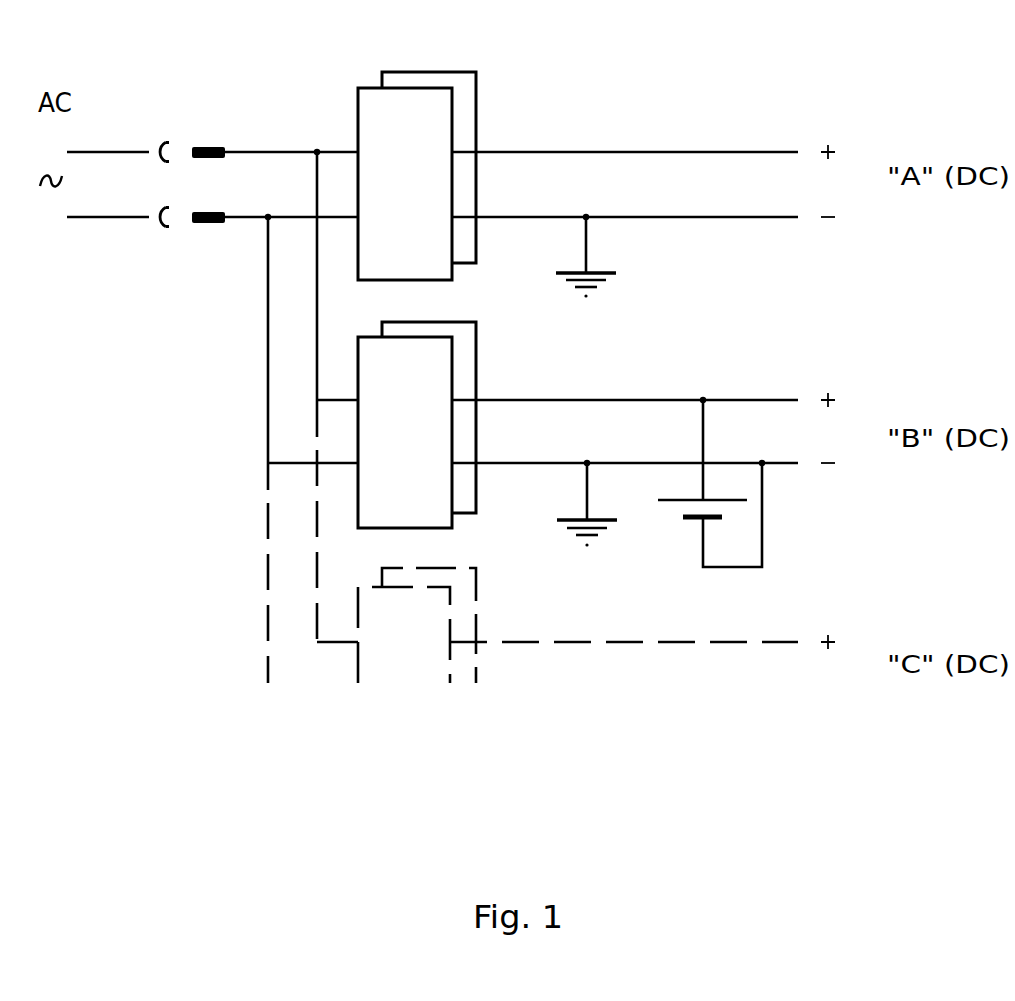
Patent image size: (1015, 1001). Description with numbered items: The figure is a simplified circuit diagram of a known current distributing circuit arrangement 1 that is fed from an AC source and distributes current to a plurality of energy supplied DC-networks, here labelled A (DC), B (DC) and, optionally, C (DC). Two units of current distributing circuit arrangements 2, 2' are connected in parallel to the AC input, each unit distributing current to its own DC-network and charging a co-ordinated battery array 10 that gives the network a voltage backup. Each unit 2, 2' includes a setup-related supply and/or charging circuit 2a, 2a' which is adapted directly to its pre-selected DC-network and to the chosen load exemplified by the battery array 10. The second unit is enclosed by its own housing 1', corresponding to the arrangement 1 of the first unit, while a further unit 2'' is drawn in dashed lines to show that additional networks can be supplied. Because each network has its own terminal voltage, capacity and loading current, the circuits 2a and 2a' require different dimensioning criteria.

The current distributing circuit arrangement 1 is at (456, 138).
The current distributing circuit arrangement 1' is at (456, 387).
The current distributing circuit arrangement unit 2 is at (578, 184).
The supply and/or charging circuit 2a is at (592, 231).
The current distributing circuit arrangement unit 2' is at (557, 432).
The supply and/or charging circuit 2a' is at (533, 480).
The current distributing circuit arrangement unit 2'' is at (557, 625).
The battery array 10 is at (711, 482).